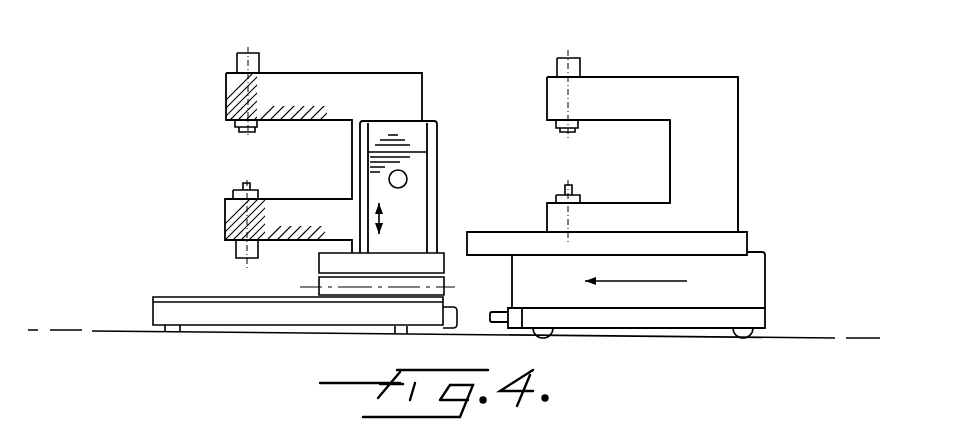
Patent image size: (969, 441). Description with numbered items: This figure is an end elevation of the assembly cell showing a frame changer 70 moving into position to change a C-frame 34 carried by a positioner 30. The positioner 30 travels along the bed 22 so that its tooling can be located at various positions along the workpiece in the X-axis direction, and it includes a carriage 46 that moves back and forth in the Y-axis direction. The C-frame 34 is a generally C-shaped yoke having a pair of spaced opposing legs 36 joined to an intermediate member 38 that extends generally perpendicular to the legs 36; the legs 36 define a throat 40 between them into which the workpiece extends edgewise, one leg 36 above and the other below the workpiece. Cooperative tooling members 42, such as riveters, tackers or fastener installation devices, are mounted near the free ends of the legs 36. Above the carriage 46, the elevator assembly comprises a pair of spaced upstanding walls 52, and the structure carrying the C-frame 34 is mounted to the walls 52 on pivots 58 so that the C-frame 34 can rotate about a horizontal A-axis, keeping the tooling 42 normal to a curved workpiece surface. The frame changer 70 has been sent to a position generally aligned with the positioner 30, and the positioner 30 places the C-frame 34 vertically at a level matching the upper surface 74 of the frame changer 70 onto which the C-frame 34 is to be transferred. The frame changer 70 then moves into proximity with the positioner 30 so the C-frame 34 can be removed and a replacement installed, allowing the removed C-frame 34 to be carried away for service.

The bed 22 is at (115, 330).
The positioner 30 is at (193, 290).
The C-frame 34 is at (410, 86).
The legs 36 is at (278, 87).
The intermediate member 38 is at (738, 157).
The throat 40 is at (194, 158).
The tooling members 42 is at (240, 124).
The carriage 46 is at (322, 262).
The upstanding walls 52 is at (428, 162).
The pivots 58 is at (405, 173).
The frame changer 70 is at (773, 269).
The upper surface 74 is at (524, 232).